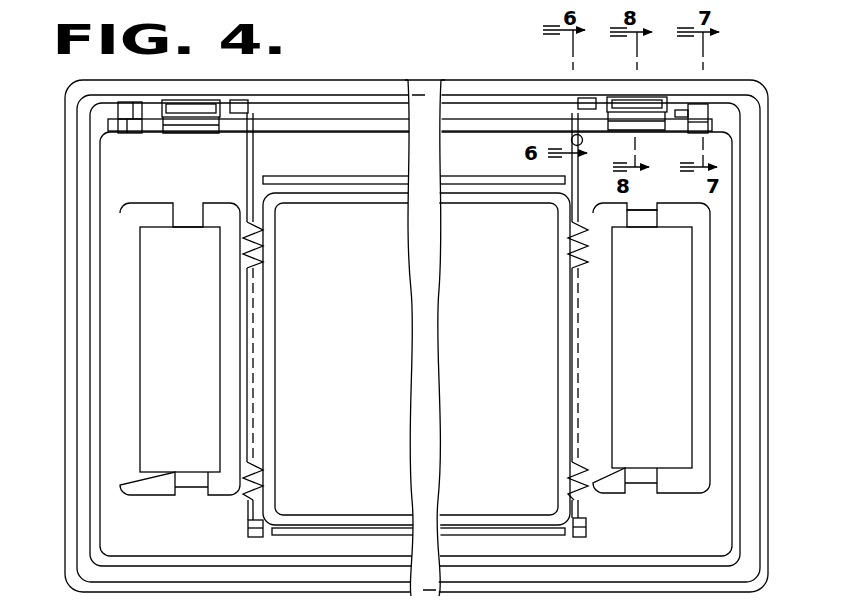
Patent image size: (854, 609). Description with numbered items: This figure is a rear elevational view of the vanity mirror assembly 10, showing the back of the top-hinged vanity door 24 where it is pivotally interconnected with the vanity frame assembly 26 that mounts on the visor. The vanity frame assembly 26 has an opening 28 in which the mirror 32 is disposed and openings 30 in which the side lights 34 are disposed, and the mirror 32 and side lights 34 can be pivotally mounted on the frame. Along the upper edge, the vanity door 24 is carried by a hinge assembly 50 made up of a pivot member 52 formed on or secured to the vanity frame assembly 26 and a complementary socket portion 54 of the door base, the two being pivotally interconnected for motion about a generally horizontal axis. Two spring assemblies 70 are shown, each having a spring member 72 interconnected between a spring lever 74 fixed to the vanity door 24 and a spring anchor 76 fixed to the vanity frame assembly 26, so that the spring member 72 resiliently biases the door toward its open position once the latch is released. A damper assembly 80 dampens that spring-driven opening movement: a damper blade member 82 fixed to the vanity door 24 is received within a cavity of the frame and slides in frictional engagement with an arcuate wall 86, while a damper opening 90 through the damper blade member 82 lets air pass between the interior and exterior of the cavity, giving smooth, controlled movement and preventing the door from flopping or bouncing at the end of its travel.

The vanity mirror assembly 10 is at (750, 206).
The vanity door 24 is at (68, 504).
The vanity frame assembly 26 is at (99, 450).
The opening 28 is at (493, 205).
The opening 30 is at (155, 233).
The mirror 32 is at (351, 452).
The side light 34 is at (160, 460).
The hinge assembly 50 is at (116, 108).
The pivot member 52 is at (127, 133).
The socket portion 54 is at (136, 115).
The spring assembly 70 is at (257, 114).
The spring member 72 is at (262, 244).
The spring lever 74 is at (242, 114).
The spring anchor 76 is at (248, 530).
The damper assembly 80 is at (207, 81).
The damper blade member 82 is at (178, 114).
The arcuate wall 86 is at (212, 134).
The damper opening 90 is at (192, 114).